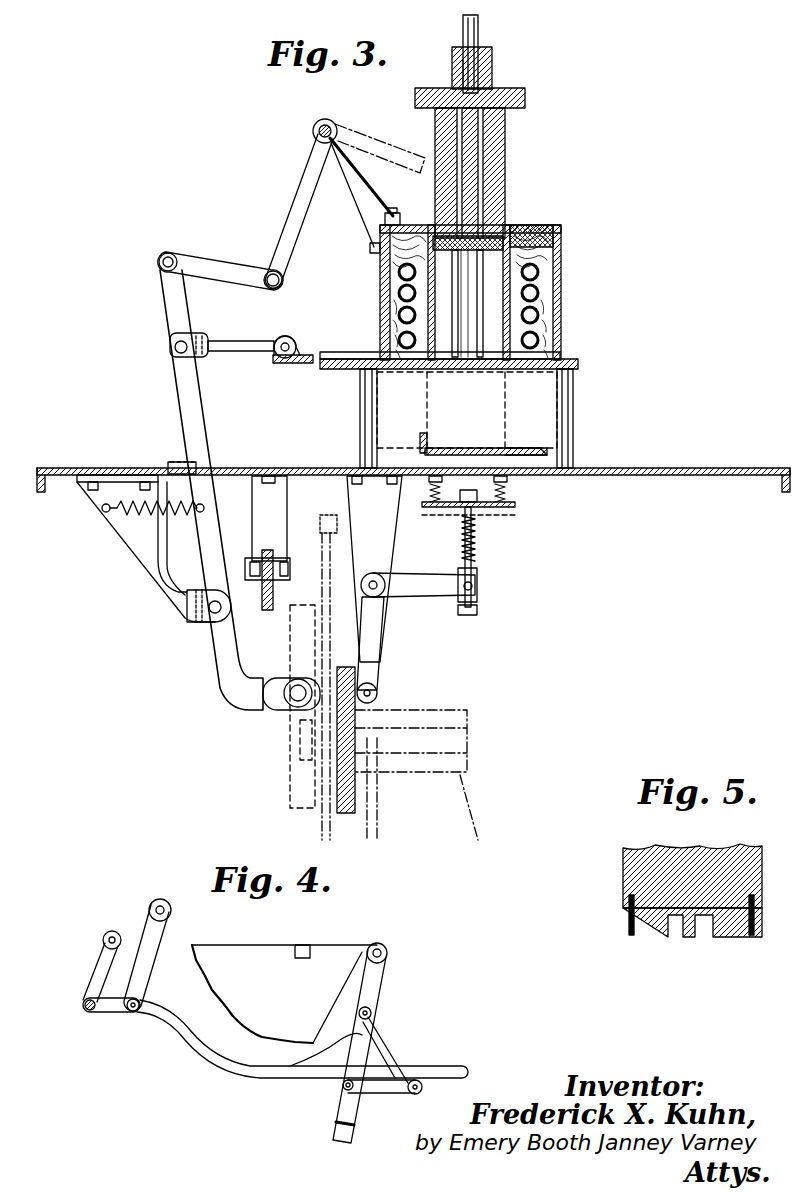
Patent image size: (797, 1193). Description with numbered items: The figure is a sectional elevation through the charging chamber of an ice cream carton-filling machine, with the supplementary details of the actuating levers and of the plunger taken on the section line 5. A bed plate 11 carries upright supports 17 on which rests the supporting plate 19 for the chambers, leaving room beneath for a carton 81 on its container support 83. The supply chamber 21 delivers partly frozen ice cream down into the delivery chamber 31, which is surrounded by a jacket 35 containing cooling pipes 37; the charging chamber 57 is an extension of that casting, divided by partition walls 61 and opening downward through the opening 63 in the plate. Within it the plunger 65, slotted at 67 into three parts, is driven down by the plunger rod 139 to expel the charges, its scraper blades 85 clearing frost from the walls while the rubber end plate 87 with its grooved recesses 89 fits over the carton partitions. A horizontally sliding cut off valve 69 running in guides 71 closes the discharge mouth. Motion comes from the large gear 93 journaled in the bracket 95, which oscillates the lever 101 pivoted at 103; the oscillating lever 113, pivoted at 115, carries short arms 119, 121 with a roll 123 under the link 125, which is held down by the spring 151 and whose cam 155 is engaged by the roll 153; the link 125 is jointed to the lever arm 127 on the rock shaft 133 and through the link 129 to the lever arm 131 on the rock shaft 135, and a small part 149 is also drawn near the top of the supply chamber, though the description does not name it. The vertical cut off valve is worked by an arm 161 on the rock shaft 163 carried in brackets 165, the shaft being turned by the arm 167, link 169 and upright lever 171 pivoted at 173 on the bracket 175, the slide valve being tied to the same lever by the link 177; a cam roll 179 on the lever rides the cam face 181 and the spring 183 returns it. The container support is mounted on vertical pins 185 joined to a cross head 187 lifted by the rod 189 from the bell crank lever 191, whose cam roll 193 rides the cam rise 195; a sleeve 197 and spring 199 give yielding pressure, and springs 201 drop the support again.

In FIG. 3, the section line 5— 5 is at (430, 131).
In FIG. 3, the bed plate 11 is at (92, 448).
In FIG. 3, the upright supports 17 is at (360, 405).
In FIG. 3, the supporting plate 19 is at (578, 364).
In FIG. 4, the supply chamber 21 is at (238, 950).
In FIG. 3, the delivery chamber 31 is at (510, 316).
In FIG. 3, the jacket 35 is at (378, 270).
In FIG. 3, the pipes 37 is at (390, 297).
In FIG. 3, the charging chamber 57 is at (462, 350).
In FIG. 3, the partition walls 61 is at (452, 310).
In FIG. 3, the opening 63 is at (495, 358).
In FIG. 3, the plunger 65 is at (505, 160).
In FIG. 5, the plunger 65 is at (740, 857).
In FIG. 3, the vertical slots 67 is at (462, 135).
In FIG. 3, the slide cut off valve 69 is at (310, 368).
In FIG. 3, the horizontal guides 71 is at (356, 350).
In FIG. 3, the carton 81 is at (508, 412).
In FIG. 3, the container support 83 is at (528, 448).
In FIG. 3, the scraper blades 85 is at (440, 236).
In FIG. 3, the end plate 87 is at (525, 233).
In FIG. 5, the end plate 87 is at (627, 925).
In FIG. 5, the grooved recesses 89 is at (648, 938).
In FIG. 3, the large gear 93 is at (326, 515).
In FIG. 3, the bracket 95 is at (470, 800).
In FIG. 3, the lever 101 is at (273, 580).
In FIG. 3, the pivot 103 is at (290, 568).
In FIG. 4, the oscillating lever 113 is at (340, 1122).
In FIG. 4, the pivot 115 is at (388, 950).
In FIG. 4, the short arm 119 is at (372, 1020).
In FIG. 4, the short arm 121 is at (395, 1063).
In FIG. 4, the roll 123 is at (423, 1087).
In FIG. 4, the link 125 is at (455, 1065).
In FIG. 4, the lever arm 127 is at (143, 985).
In FIG. 4, the link 129 is at (113, 1012).
In FIG. 4, the lever arm 131 is at (96, 972).
In FIG. 4, the rock shaft 133 is at (171, 908).
In FIG. 4, the rock shaft 135 is at (103, 937).
In FIG. 3, the plunger rod 139 is at (478, 30).
In FIG. 4, the lug 149 is at (305, 945).
In FIG. 4, the spring 151 is at (295, 1062).
In FIG. 4, the roll 153 is at (343, 1088).
In FIG. 4, the cam 155 is at (368, 1095).
In FIG. 3, the arm 161 is at (375, 130).
In FIG. 3, the rock shaft 163 is at (313, 124).
In FIG. 3, the brackets 165 is at (352, 197).
In FIG. 3, the arm 167 is at (300, 170).
In FIG. 3, the link 169 is at (226, 262).
In FIG. 3, the upright lever 171 is at (175, 410).
In FIG. 3, the pivot 173 is at (222, 612).
In FIG. 3, the bracket 175 is at (133, 571).
In FIG. 3, the link 177 is at (240, 340).
In FIG. 3, the cam roll 179 is at (283, 712).
In FIG. 3, the cam face 181 is at (290, 790).
In FIG. 3, the spring 183 is at (118, 514).
In FIG. 3, the vertical pins 185 is at (460, 455).
In FIG. 3, the cross head 187 is at (515, 506).
In FIG. 3, the rod 189 is at (472, 548).
In FIG. 3, the bell crank lever 191 is at (412, 596).
In FIG. 3, the cam roll 193 is at (378, 693).
In FIG. 3, the cam rise 195 is at (355, 792).
In FIG. 3, the sleeve 197 is at (478, 585).
In FIG. 3, the spring 199 is at (462, 532).
In FIG. 3, the springs 201 is at (430, 488).